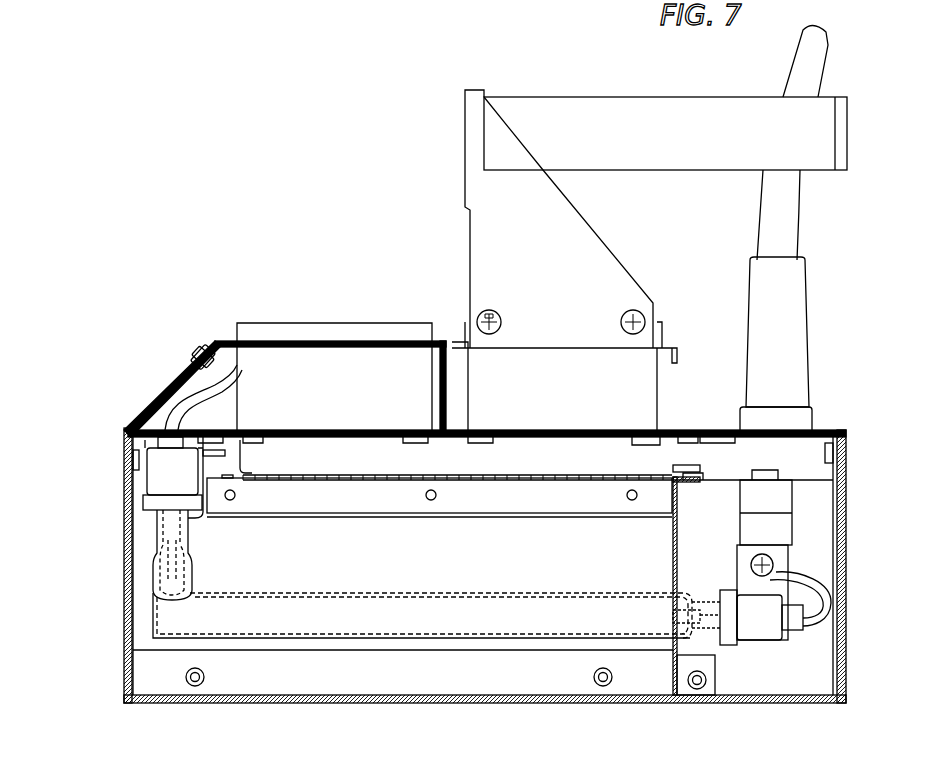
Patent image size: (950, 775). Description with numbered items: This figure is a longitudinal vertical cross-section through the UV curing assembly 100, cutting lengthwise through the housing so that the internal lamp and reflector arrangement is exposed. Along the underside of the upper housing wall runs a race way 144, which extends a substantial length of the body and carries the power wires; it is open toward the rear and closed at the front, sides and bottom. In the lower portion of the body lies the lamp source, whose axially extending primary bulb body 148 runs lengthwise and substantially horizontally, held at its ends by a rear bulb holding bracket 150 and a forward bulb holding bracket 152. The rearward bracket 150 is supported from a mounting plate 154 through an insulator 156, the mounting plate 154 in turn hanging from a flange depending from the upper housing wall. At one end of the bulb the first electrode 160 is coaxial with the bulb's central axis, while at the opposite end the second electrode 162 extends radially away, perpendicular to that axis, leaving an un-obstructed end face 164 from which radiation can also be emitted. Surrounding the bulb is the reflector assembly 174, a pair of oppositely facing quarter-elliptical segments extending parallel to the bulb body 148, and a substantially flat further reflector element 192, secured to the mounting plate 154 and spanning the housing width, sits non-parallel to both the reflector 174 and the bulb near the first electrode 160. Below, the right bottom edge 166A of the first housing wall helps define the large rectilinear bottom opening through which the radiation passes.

The lamp assembly 100 is at (571, 50).
The race way 144 is at (303, 461).
The primary bulb body 148 is at (476, 640).
The rear bulb holding bracket 150 is at (785, 642).
The forward bulb holding bracket 152 is at (147, 487).
The mounting plate 154 is at (808, 475).
The insulator 156 is at (782, 528).
The first electrode 160 is at (671, 622).
The second electrode 162 is at (163, 583).
The end face 164 is at (153, 622).
The right bottom edge 166A is at (385, 688).
The reflector assembly 174 is at (145, 604).
The further reflector element 192 is at (672, 555).